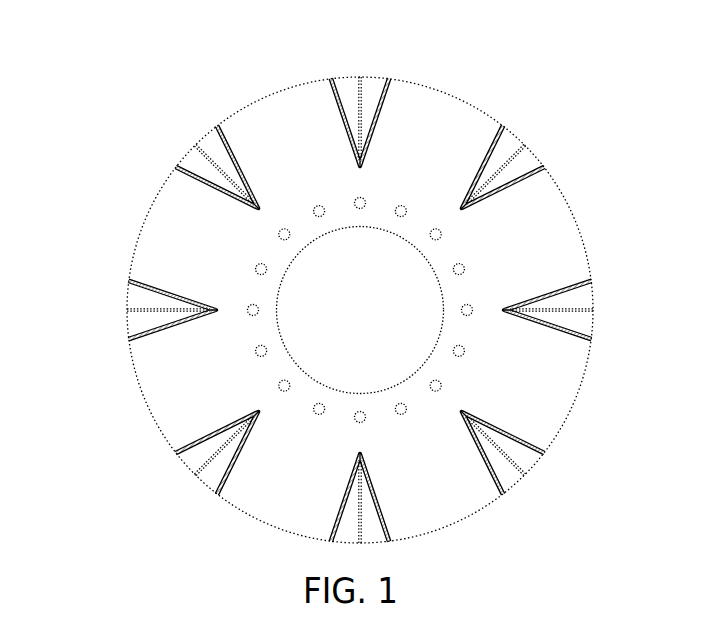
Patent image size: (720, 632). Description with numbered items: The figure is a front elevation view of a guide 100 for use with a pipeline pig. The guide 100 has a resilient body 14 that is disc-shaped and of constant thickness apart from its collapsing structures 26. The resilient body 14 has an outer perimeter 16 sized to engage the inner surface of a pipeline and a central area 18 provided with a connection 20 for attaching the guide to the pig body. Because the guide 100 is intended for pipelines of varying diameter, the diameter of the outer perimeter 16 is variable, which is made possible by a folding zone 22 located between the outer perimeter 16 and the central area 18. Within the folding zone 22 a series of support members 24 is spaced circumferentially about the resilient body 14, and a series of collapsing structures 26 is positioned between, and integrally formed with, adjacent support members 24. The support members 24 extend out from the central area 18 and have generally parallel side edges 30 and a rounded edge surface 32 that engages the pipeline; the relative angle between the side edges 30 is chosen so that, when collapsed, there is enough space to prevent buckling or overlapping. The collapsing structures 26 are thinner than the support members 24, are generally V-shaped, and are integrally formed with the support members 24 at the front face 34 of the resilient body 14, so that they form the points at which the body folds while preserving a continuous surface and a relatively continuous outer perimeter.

The guide 100 is at (612, 175).
The resilient body 14 is at (263, 120).
The outer perimeter 16 is at (140, 393).
The central area 18 is at (268, 310).
The connection 20 is at (260, 348).
The folding zone 22 is at (180, 197).
The support members 24 is at (437, 120).
The collapsing structures 26 is at (510, 153).
The side edges 30 is at (345, 127).
The rounded edge surface 32 is at (302, 82).
The front face 34 is at (512, 262).